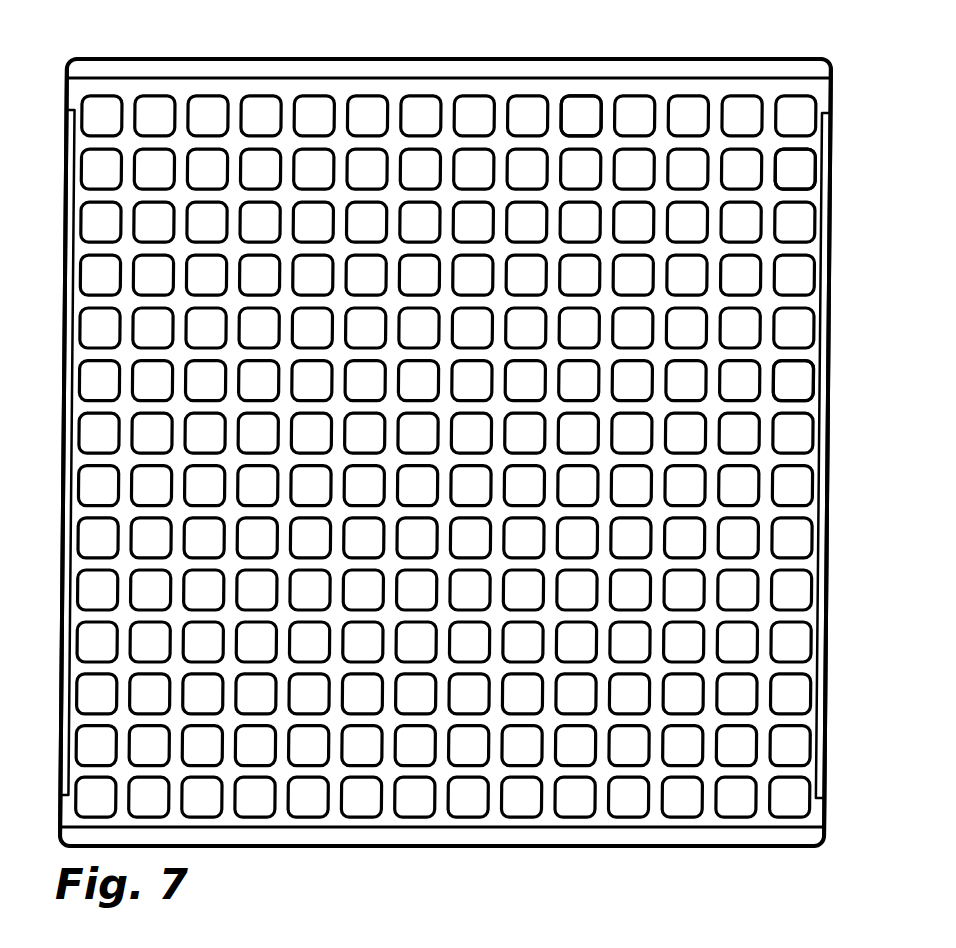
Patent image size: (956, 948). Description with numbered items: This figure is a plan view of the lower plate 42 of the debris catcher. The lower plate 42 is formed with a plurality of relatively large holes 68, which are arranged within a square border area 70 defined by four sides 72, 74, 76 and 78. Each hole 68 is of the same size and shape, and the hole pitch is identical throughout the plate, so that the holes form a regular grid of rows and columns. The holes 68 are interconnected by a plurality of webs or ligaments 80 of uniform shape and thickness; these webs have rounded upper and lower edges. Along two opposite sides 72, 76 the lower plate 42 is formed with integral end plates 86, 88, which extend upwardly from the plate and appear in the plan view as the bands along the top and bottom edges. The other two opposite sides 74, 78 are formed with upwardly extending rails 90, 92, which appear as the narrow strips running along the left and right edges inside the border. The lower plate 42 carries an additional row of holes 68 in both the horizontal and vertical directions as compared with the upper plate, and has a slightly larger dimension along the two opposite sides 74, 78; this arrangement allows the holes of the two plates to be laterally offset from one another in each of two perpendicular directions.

The lower plate 42 is at (792, 15).
The holes 68 is at (588, 106).
The square border area 70 is at (802, 351).
The side 72 is at (201, 57).
The side 74 is at (65, 214).
The side 76 is at (310, 847).
The side 78 is at (824, 485).
The webs or ligaments 80 is at (770, 165).
The end plate 86 is at (494, 65).
The end plate 88 is at (523, 838).
The rail 90 is at (66, 472).
The rail 92 is at (818, 747).